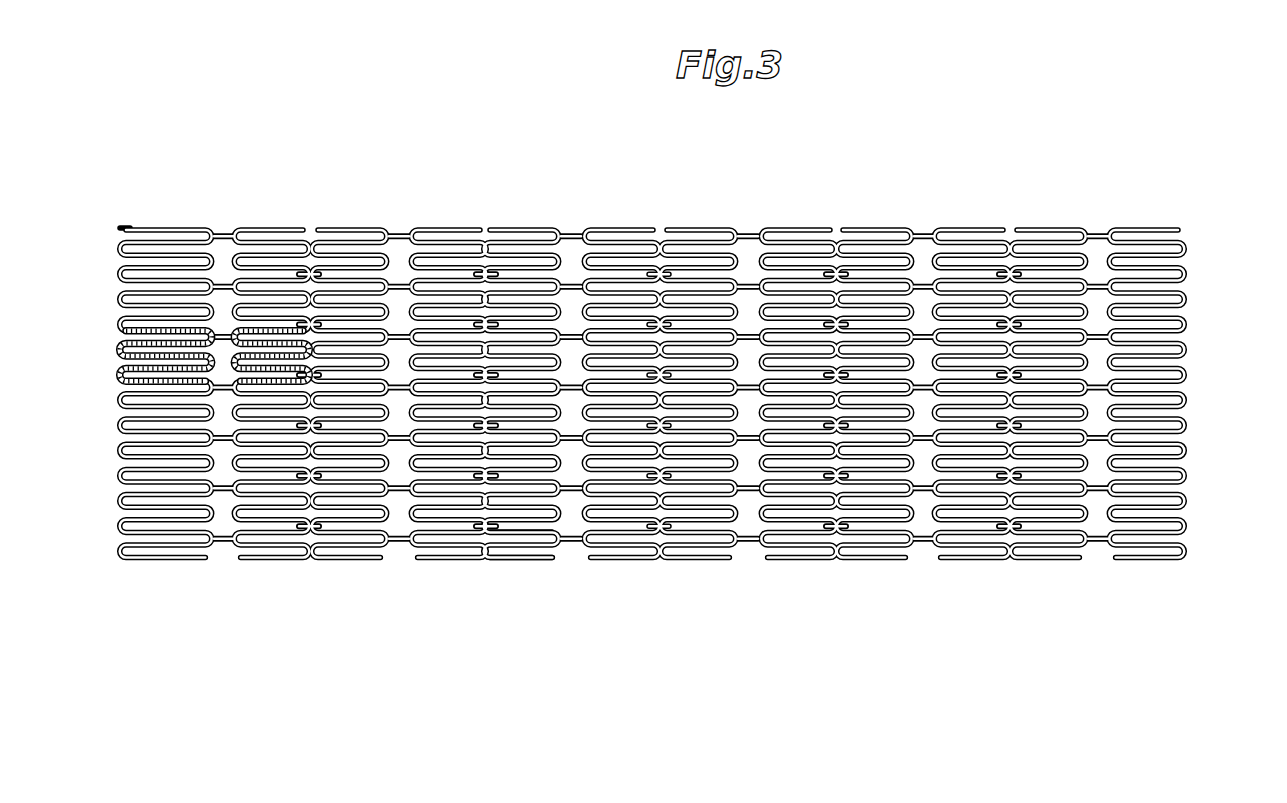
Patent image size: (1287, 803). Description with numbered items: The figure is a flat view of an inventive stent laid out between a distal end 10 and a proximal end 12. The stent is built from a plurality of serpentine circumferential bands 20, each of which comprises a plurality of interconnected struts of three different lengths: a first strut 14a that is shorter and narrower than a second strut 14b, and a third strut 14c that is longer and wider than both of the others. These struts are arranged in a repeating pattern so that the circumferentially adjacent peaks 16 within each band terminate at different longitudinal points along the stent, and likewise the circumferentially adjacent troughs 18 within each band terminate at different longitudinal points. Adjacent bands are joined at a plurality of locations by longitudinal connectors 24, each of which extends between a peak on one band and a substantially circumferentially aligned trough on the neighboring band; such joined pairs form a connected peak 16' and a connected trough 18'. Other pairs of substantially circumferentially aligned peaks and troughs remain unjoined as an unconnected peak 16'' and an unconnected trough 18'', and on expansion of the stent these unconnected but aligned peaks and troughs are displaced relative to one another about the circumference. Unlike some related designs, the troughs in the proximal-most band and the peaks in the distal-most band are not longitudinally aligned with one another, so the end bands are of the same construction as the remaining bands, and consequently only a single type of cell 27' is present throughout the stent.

The distal end 10 is at (658, 398).
The proximal end 12 is at (104, 300).
The first strut 14a is at (547, 527).
The second strut 14b is at (533, 540).
The third strut 14c is at (493, 557).
The peaks 16 is at (609, 374).
The connected peak 16' is at (544, 400).
The unconnected peak 16'' is at (893, 407).
The troughs 18 is at (709, 372).
The connected trough 18' is at (657, 397).
The unconnected trough 18'' is at (1064, 393).
The serpentine circumferential band 20 is at (592, 230).
The longitudinal connector 24 is at (220, 257).
The cell 27' is at (186, 373).